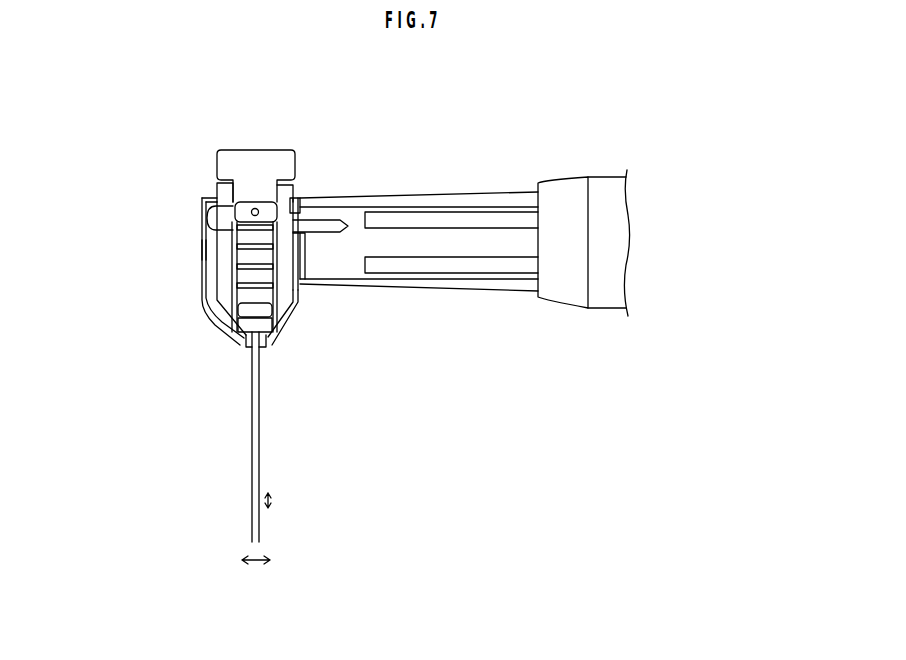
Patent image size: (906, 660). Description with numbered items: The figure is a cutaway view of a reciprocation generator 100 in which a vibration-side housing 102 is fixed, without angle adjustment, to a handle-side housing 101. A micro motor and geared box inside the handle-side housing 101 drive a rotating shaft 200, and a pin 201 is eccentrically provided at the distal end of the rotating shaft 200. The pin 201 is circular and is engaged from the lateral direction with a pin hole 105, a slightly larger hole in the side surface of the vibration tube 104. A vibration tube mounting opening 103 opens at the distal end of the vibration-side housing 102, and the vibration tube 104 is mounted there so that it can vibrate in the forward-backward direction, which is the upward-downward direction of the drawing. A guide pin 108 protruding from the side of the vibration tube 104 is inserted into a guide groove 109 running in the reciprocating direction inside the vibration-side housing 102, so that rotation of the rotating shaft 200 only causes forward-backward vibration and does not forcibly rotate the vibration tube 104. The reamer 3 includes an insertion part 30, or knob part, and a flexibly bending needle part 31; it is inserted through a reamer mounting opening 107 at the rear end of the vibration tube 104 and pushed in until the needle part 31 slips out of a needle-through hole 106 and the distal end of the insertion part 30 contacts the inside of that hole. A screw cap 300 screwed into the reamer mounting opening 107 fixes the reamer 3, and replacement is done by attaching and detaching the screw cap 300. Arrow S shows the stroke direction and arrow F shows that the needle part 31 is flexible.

The reciprocation generator 100 is at (680, 140).
The handle-side housing 101 is at (493, 200).
The rotating shaft 200 is at (463, 240).
The pin 201 is at (328, 243).
The pin hole 105 is at (313, 196).
The vibration-side housing 102 is at (207, 299).
The guide groove 109 is at (205, 247).
The vibration tube mounting opening 103 is at (217, 308).
The reamer mounting opening 107 is at (219, 188).
The guide pin 108 is at (208, 217).
The screw cap 300 is at (255, 178).
The insertion part 30 is at (252, 275).
The vibration tube 104 is at (240, 347).
The needle-through hole 106 is at (278, 347).
The reamer 3 is at (249, 437).
The needle part 31 is at (253, 484).